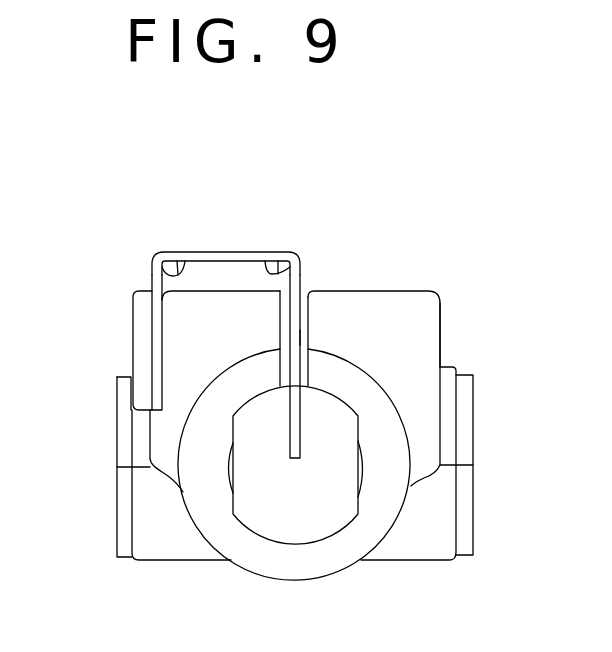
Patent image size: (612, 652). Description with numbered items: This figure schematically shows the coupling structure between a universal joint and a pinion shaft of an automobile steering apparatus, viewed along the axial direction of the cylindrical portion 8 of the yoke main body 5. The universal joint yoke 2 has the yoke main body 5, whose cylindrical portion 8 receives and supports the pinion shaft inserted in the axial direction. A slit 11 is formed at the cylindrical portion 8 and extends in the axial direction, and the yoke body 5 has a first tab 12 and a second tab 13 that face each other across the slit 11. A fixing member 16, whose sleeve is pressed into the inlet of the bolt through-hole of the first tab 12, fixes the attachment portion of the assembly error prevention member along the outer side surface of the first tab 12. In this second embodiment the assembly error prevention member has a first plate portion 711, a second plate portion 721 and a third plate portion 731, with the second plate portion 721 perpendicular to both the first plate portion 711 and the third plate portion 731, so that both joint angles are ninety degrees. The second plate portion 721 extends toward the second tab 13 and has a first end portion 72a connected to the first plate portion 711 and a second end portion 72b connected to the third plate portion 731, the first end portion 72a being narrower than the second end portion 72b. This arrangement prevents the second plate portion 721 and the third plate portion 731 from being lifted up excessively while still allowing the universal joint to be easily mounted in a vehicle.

The universal joint yoke 2 is at (450, 357).
The yoke main body 5 is at (442, 303).
The cylindrical portion 8 is at (312, 562).
The slit 11 is at (302, 293).
The first tab 12 is at (183, 375).
The second tab 13 is at (428, 338).
The fixing member 16 is at (133, 313).
The first plate portion 711 is at (153, 348).
The second plate portion 721 is at (214, 249).
The first end portion 72a is at (172, 251).
The second end portion 72b is at (281, 252).
The third plate portion 731 is at (300, 338).